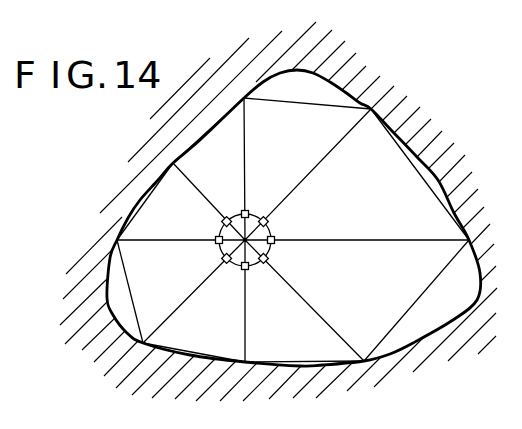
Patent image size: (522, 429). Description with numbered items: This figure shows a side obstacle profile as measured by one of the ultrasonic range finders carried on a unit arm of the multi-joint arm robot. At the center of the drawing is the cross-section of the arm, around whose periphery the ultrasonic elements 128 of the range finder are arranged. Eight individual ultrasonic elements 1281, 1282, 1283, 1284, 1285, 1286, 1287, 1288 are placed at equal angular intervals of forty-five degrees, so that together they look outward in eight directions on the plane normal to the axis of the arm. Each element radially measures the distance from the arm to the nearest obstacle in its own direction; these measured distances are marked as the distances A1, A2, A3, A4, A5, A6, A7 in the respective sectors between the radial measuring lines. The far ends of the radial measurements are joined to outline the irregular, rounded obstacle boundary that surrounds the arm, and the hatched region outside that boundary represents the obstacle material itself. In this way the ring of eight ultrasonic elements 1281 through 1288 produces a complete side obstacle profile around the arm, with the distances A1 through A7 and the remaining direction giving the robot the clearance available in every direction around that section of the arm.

The ultrasonic element 128 is at (245, 240).
The ultrasonic element 1281 is at (248, 211).
The ultrasonic element 1282 is at (269, 220).
The ultrasonic element 1283 is at (276, 248).
The ultrasonic element 1284 is at (267, 267).
The ultrasonic element 1285 is at (242, 269).
The ultrasonic element 1286 is at (222, 260).
The ultrasonic element 1287 is at (216, 238).
The ultrasonic element 1288 is at (223, 220).
The distance A1 is at (307, 113).
The distance A2 is at (321, 169).
The distance A3 is at (416, 300).
The distance A4 is at (311, 340).
The distance A5 is at (210, 346).
The distance A6 is at (155, 293).
The distance A7 is at (145, 216).